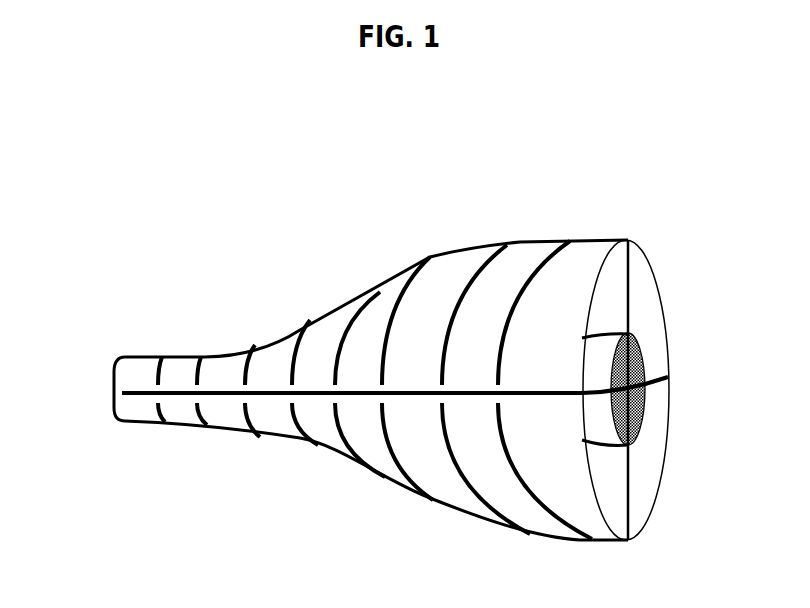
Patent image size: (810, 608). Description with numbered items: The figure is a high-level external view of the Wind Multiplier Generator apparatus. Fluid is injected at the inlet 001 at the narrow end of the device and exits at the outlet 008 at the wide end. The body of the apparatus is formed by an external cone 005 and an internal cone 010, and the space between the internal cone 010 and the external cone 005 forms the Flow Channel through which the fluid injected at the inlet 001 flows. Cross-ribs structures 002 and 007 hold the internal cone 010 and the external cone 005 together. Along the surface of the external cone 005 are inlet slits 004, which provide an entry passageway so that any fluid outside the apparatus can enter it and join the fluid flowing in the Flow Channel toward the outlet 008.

The inlet 001 is at (107, 393).
The cross-ribs structure 002 is at (228, 398).
The inlet slits 004 is at (334, 424).
The external cone 005 is at (434, 340).
The cross-ribs structure 007 is at (634, 283).
The outlet 008 is at (658, 420).
The internal cone 010 is at (643, 364).